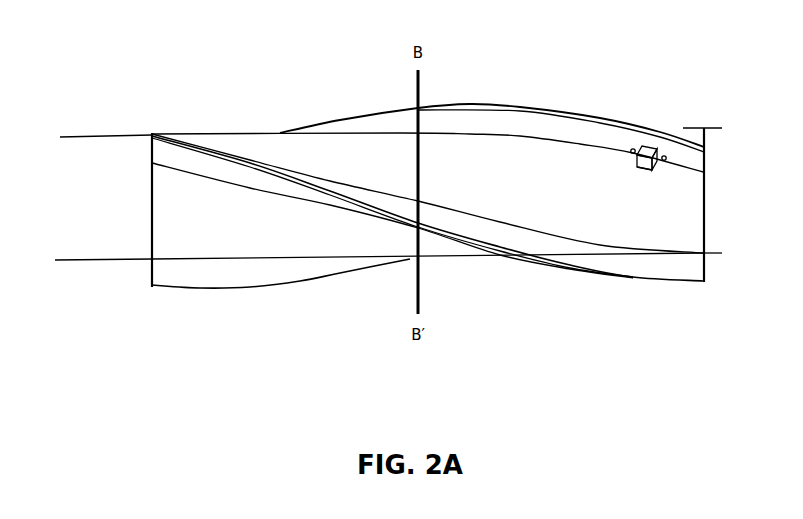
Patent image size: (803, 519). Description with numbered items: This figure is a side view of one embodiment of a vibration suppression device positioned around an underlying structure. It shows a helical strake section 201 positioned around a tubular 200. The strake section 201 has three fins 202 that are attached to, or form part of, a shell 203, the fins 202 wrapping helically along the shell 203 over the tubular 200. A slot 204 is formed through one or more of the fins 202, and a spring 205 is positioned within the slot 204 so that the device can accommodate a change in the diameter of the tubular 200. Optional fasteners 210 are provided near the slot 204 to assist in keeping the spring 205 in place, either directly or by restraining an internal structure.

The tubular 200 is at (100, 126).
The helical strake section 201 is at (210, 65).
The fins 202 is at (478, 94).
The shell 203 is at (166, 217).
The slot 204 is at (630, 132).
The spring 205 is at (666, 176).
The fasteners 210 is at (619, 139).